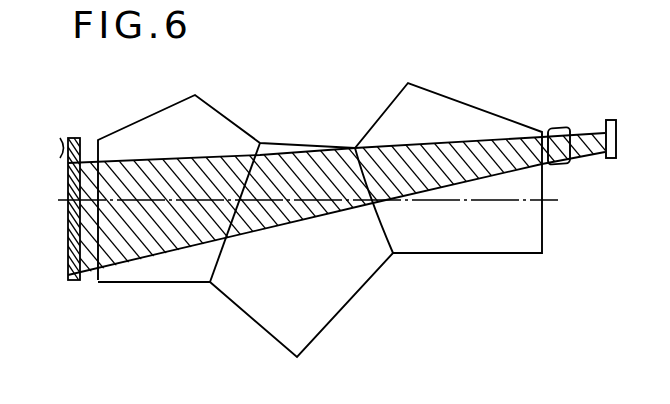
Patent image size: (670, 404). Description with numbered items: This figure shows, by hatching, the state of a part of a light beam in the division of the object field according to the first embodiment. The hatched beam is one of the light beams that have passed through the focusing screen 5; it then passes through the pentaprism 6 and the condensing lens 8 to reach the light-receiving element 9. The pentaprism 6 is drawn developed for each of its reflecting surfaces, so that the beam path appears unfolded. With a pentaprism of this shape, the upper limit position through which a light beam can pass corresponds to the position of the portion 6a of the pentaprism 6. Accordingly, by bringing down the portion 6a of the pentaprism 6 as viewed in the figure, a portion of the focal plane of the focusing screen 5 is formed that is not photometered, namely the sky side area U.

The focusing screen 5 is at (68, 230).
The sky side area U is at (60, 148).
The pentaprism 6 is at (445, 122).
The portion of the pentaprism 6a is at (355, 148).
The condensing lens 8 is at (556, 127).
The light-receiving element 9 is at (611, 120).